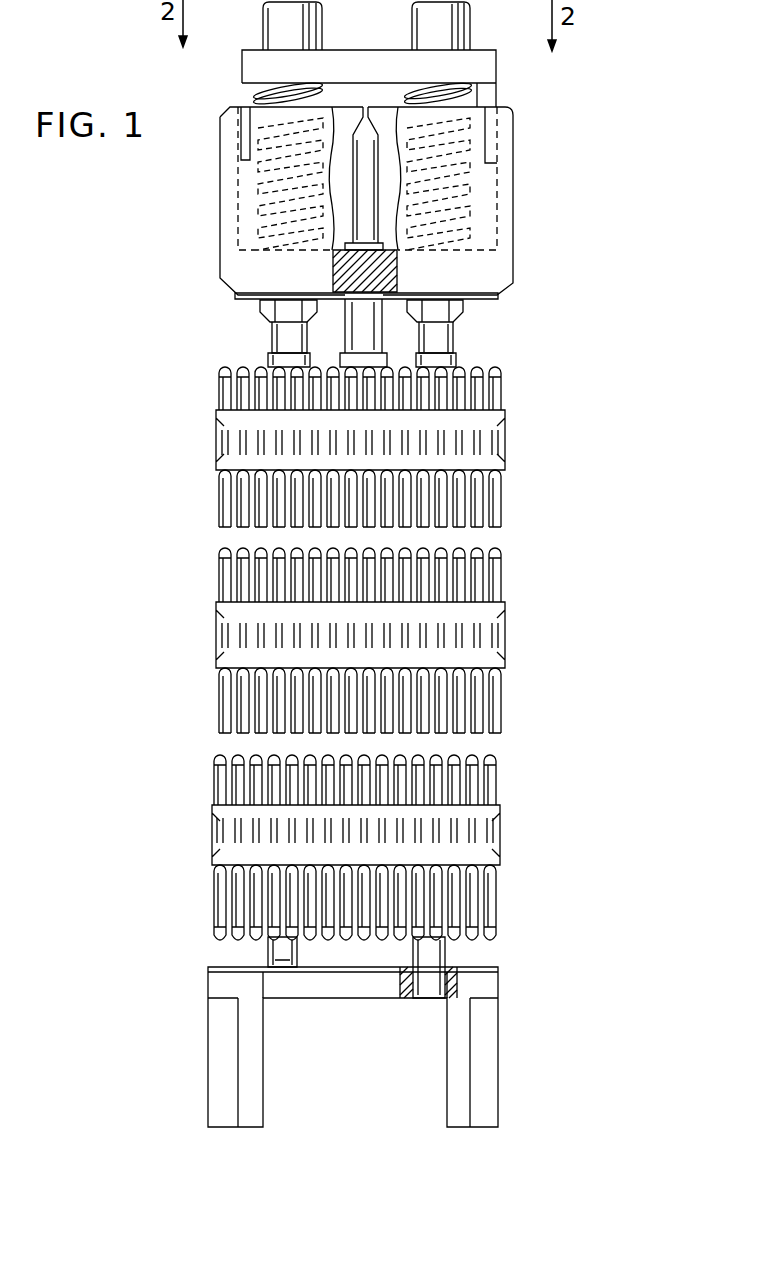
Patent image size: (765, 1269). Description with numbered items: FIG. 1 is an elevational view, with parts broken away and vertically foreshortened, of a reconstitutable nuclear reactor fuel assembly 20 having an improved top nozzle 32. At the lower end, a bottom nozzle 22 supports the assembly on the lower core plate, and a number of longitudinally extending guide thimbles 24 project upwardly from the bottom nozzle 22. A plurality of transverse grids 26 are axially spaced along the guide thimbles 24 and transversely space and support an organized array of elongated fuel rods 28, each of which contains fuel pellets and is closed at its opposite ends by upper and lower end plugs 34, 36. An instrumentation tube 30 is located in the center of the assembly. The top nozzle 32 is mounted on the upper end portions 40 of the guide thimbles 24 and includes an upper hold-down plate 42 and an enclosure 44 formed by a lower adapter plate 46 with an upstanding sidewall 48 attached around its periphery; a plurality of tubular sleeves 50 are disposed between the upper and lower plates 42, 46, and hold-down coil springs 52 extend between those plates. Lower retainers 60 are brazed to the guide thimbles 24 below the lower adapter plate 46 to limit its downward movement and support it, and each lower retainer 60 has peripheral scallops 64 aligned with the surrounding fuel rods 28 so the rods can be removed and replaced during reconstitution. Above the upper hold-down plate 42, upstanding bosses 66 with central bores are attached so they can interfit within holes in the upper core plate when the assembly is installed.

The fuel assembly 20 is at (566, 310).
The bottom nozzle 22 is at (500, 1035).
The guide thimbles 24 is at (270, 345).
The transverse grids 26 is at (508, 447).
The fuel rods 28 is at (243, 767).
The instrumentation tube 30 is at (353, 317).
The top nozzle 32 is at (516, 108).
The upper end plugs 34 is at (225, 378).
The lower end plugs 36 is at (222, 935).
The upper end portions of the guide thimbles 40 is at (273, 331).
The upper hold-down plate 42 is at (496, 78).
The enclosure 44 is at (221, 252).
The lower adapter plate 46 is at (490, 281).
The upstanding sidewall 48 is at (515, 200).
The tubular sleeves 50 is at (257, 207).
The hold-down coil springs 52 is at (262, 100).
The lower retainers 60 is at (262, 305).
The scallops 64 is at (462, 300).
The upstanding bosses 66 is at (313, 27).